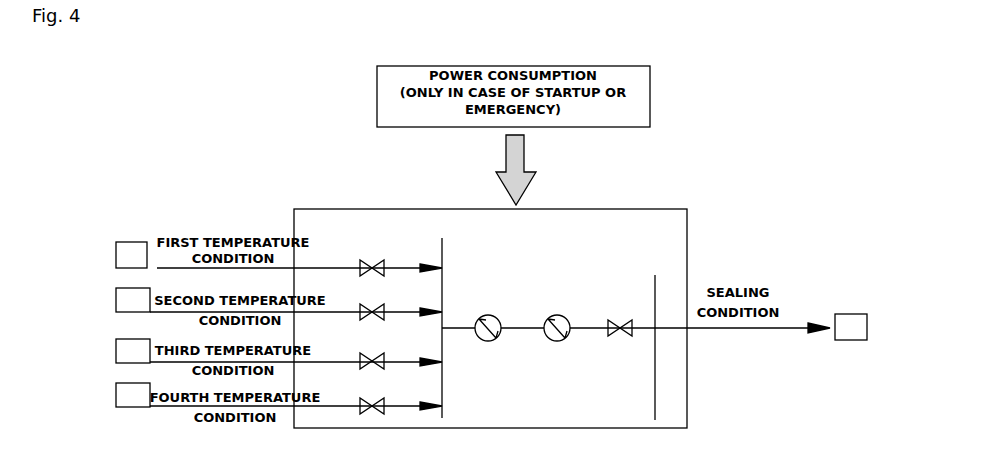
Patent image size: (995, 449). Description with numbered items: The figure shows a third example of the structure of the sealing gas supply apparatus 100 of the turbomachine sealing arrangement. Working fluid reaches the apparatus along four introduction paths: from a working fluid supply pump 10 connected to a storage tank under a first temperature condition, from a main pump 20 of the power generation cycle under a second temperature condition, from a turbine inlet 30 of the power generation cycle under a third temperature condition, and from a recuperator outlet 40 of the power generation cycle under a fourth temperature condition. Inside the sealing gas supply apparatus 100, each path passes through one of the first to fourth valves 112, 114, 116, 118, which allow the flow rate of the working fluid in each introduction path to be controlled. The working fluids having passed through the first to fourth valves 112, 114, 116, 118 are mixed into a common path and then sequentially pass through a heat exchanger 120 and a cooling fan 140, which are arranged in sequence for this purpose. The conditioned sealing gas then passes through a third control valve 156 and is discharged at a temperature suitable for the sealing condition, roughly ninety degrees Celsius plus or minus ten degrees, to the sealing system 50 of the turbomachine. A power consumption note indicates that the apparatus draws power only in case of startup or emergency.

The working fluid supply pump 10 is at (131, 255).
The main pump 20 is at (133, 300).
The turbine inlet 30 is at (133, 351).
The recuperator outlet 40 is at (133, 395).
The sealing system 50 is at (851, 327).
The sealing gas supply apparatus 100 is at (683, 237).
The first valve 112 is at (377, 257).
The second valve 114 is at (377, 301).
The third valve 116 is at (377, 350).
The fourth valve 118 is at (377, 395).
The heat exchanger 120 is at (491, 319).
The cooling fan 140 is at (561, 319).
The third control valve 156 is at (624, 317).